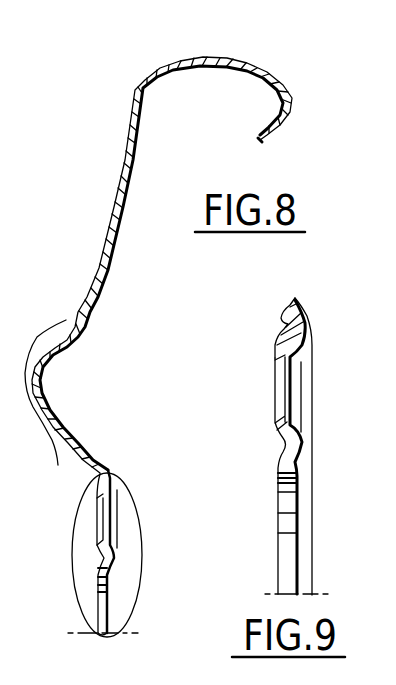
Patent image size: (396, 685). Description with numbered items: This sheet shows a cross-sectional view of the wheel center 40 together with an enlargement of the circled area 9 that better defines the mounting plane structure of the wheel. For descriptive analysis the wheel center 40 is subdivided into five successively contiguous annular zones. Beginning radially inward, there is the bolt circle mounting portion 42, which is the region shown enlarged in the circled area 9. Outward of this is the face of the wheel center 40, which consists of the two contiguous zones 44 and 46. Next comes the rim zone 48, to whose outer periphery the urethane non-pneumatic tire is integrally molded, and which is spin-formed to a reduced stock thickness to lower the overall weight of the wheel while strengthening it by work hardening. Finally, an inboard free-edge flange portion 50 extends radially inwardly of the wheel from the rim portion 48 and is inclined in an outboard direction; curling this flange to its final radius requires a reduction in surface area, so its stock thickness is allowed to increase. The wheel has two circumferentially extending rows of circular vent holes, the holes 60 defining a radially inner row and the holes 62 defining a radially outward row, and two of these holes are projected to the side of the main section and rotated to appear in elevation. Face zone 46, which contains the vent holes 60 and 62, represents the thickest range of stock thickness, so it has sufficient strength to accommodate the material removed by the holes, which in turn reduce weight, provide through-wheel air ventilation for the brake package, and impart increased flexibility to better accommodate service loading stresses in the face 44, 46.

In FIG. 8, the wheel center 40 is at (122, 52).
In FIG. 8, the bolt circle mounting portion 42 is at (94, 572).
In FIG. 9, the bolt circle mounting portion 42 is at (263, 319).
In FIG. 8, the face zone 44 is at (97, 486).
In FIG. 8, the face zone 46 is at (128, 84).
In FIG. 8, the rim zone 48 is at (300, 90).
In FIG. 8, the inboard free-edge flange portion 50 is at (293, 92).
In FIG. 8, the vent holes 60 is at (102, 262).
In FIG. 8, the vent holes 62 is at (128, 160).
In FIG. 8, the circled area 9 is at (142, 533).